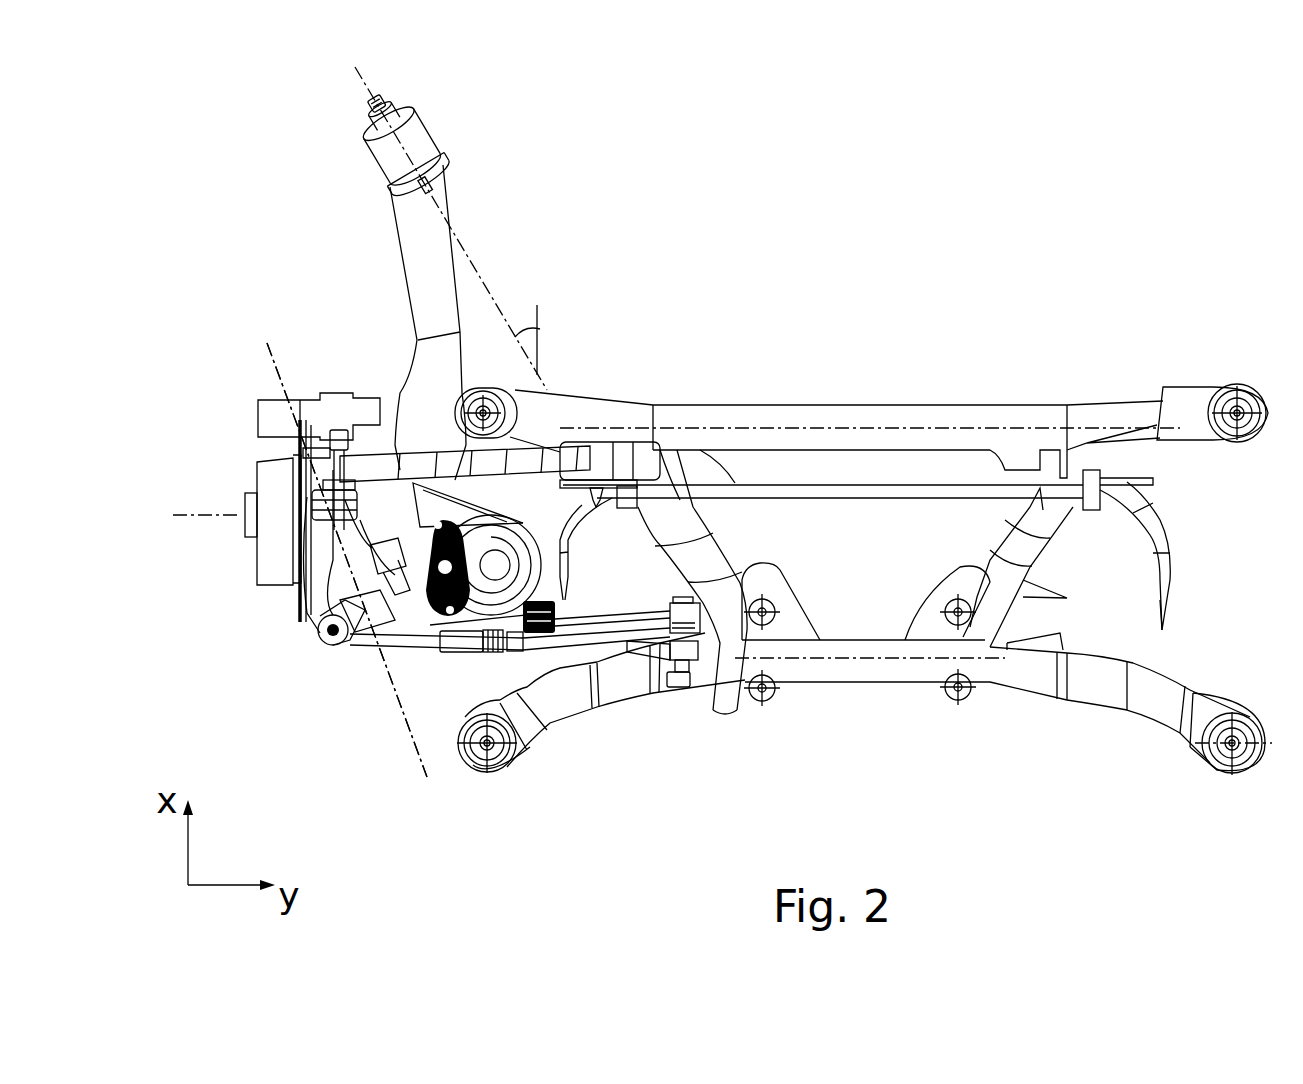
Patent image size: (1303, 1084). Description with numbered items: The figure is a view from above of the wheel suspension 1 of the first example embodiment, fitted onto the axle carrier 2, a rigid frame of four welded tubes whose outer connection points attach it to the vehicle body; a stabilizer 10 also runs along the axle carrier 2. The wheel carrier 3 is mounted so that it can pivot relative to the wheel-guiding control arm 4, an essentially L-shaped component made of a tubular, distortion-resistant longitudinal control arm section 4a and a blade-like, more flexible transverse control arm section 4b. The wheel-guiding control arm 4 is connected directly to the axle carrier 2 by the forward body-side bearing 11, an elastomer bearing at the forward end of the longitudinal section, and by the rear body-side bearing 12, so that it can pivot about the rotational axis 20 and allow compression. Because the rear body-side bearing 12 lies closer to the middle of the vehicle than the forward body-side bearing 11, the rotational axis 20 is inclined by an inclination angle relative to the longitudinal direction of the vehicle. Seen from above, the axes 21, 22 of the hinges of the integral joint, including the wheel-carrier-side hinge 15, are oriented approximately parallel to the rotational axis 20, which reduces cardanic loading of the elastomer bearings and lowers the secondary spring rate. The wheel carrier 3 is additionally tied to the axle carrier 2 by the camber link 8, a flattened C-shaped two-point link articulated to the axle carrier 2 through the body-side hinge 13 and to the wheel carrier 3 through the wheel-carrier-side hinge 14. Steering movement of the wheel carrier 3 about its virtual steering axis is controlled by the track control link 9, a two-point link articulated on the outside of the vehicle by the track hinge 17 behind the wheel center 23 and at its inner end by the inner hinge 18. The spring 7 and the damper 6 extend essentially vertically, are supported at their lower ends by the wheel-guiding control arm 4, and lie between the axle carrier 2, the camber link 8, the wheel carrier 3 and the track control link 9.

The wheel suspension 1 is at (950, 186).
The axle carrier 2 is at (915, 665).
The wheel carrier 3 is at (320, 590).
The wheel-guiding control arm 4 is at (372, 243).
The longitudinal control arm section 4a is at (425, 225).
The transverse control arm section 4b is at (613, 620).
The damper 6 is at (395, 583).
The spring 7 is at (507, 537).
The camber link 8 is at (408, 467).
The track control link 9 is at (558, 648).
The stabilizer 10 is at (910, 485).
The forward body-side bearing 11 is at (427, 130).
The rear body-side bearing 12 is at (705, 680).
The body-side hinge 13 is at (605, 458).
The wheel-carrier-side hinge 14 is at (340, 470).
The wheel-carrier-side hinge 15 is at (360, 612).
The track hinge 17 is at (320, 655).
The inner hinge 18 is at (682, 652).
The rotational axis 20 is at (483, 280).
The axis 21 is at (385, 670).
The axis 22 is at (347, 560).
The wheel center 23 is at (235, 545).